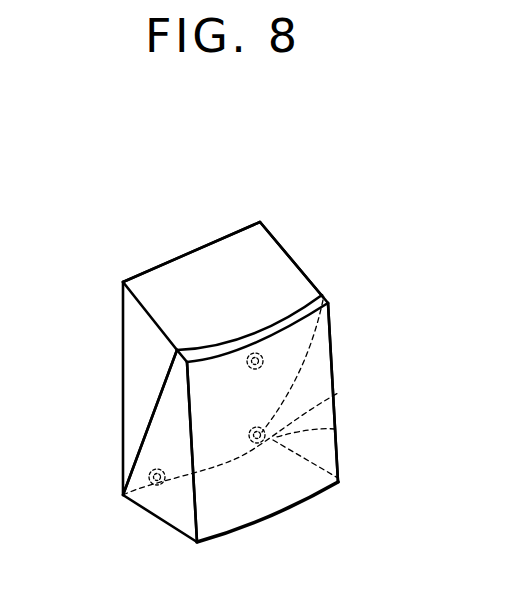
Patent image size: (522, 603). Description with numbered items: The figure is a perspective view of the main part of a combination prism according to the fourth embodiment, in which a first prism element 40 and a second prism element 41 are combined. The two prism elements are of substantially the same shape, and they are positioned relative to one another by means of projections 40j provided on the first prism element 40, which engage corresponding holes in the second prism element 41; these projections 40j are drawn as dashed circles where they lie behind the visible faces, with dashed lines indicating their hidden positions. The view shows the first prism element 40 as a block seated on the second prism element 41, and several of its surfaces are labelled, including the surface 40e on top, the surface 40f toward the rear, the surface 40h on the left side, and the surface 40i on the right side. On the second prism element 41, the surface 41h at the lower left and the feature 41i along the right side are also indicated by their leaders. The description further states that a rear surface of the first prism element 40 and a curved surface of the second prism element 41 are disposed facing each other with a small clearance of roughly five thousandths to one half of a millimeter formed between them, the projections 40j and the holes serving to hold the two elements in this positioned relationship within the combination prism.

The first prism element 40 is at (240, 217).
The top surface 40e is at (223, 258).
The rear surface 40f is at (165, 292).
The left side surface 40h is at (133, 315).
The right side surface 40i is at (270, 288).
The projections 40j is at (267, 366).
The second prism element 41 is at (278, 492).
The inclined surface 41h is at (172, 513).
The engagement groove 41i is at (335, 430).